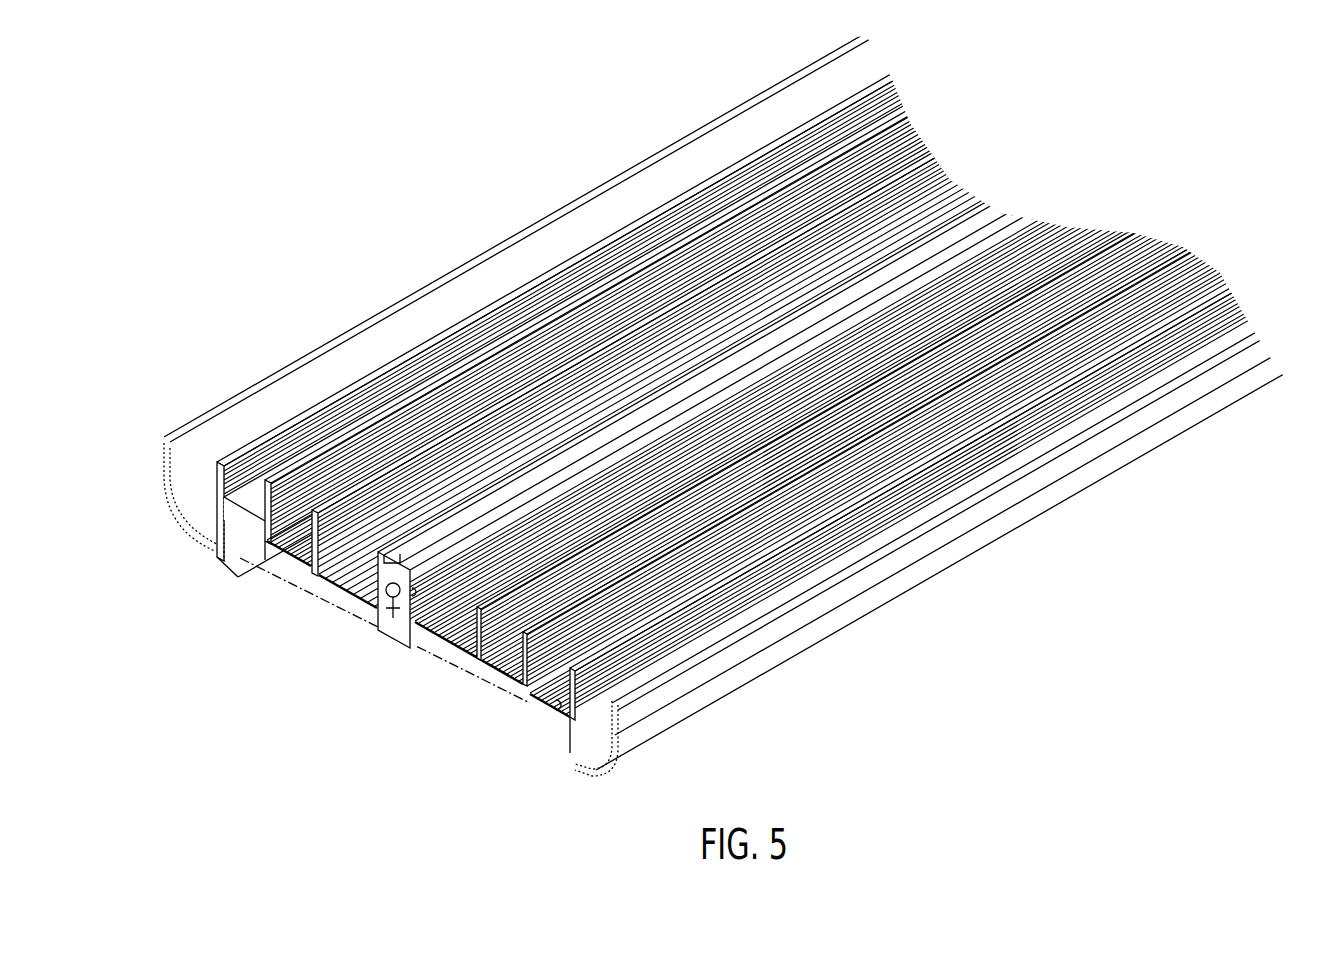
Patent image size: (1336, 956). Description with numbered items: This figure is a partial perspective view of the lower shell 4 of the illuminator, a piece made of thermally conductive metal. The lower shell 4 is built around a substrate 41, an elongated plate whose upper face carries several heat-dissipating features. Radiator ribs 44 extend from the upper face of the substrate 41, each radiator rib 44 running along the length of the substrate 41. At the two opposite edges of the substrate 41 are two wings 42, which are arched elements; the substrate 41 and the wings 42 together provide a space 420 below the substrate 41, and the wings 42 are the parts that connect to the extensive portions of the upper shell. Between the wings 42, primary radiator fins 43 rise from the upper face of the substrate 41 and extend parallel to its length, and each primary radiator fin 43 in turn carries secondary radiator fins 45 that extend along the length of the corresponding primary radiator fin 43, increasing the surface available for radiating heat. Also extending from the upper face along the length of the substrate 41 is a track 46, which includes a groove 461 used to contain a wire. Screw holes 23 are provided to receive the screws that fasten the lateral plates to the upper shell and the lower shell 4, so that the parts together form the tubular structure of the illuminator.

The lower shell 4 is at (743, 429).
The screw holes 23 is at (227, 508).
The substrate 41 is at (393, 605).
The wings 42 is at (188, 528).
The primary radiator fins 43 is at (617, 295).
The radiator ribs 44 is at (375, 552).
The secondary radiator fins 45 is at (658, 295).
The track 46 is at (420, 618).
The groove 461 is at (390, 582).
The space 420 is at (285, 592).